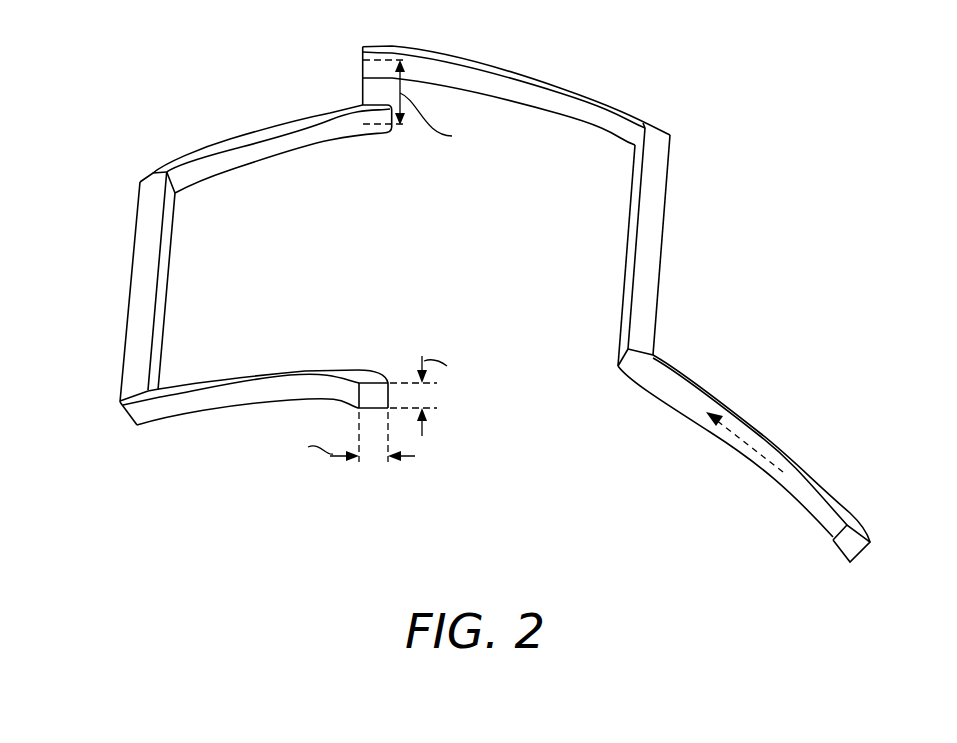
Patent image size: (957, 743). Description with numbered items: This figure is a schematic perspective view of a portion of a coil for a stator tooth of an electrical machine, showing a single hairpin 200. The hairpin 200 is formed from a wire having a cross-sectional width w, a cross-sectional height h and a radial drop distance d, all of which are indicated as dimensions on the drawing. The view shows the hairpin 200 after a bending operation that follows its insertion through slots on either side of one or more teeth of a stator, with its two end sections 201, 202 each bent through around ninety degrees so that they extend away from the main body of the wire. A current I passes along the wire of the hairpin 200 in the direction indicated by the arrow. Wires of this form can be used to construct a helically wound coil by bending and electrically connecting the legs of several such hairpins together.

The hairpin 200 is at (170, 46).
The end section 201 is at (710, 394).
The end section 202 is at (233, 392).